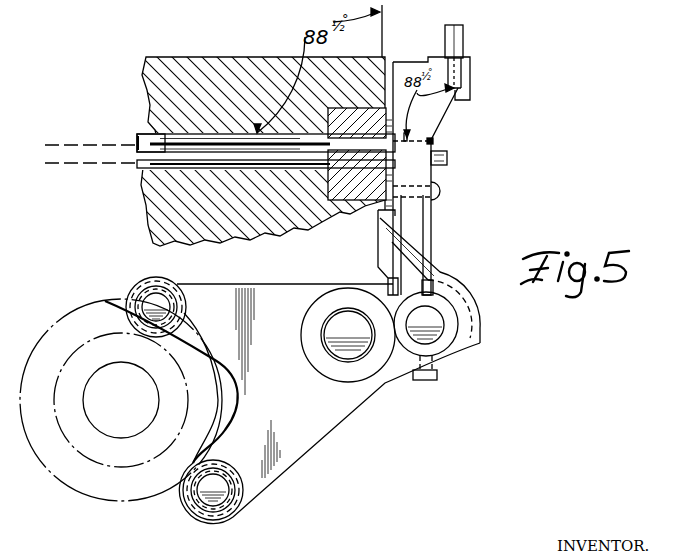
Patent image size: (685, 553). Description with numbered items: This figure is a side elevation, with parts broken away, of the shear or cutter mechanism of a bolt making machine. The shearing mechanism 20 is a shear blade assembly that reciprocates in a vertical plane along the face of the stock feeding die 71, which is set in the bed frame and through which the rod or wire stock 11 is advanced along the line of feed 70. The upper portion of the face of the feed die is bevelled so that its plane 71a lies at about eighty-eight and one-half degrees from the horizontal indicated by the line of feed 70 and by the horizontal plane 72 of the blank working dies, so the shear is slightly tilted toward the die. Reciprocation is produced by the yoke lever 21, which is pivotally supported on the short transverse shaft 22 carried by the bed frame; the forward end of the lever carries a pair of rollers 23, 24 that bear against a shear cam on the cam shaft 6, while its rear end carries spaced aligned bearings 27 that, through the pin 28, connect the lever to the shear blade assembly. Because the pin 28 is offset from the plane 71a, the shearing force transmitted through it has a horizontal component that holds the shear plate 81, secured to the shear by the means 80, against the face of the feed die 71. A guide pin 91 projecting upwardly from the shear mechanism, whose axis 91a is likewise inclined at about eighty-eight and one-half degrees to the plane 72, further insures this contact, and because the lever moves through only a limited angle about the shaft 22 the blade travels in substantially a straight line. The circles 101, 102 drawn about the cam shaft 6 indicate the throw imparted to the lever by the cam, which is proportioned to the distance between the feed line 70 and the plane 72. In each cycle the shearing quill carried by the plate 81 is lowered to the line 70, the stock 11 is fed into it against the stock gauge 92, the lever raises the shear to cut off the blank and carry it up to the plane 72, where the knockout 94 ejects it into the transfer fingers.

The cam shaft 6 is at (121, 400).
The rod or wire stock 11 is at (150, 195).
The shearing mechanism 20 is at (432, 242).
The yoke lever 21 is at (292, 404).
The transverse shaft 22 is at (338, 330).
The roller 23 is at (150, 285).
The roller 24 is at (211, 523).
The bearings 27 is at (434, 141).
The pin 28 is at (427, 335).
The line of feed 70 is at (112, 165).
The stock feeding die 71 is at (380, 122).
The plane of the feed die face 71a is at (386, 24).
The horizontal plane of the dies 72 is at (112, 142).
The securing means 80 is at (433, 190).
The shear plate 81 is at (390, 184).
The guide pin 91 is at (465, 42).
The axis of the guide pin 91a is at (467, 98).
The stock gauge 92 is at (447, 151).
The knockout 94 is at (140, 136).
The throw circle 101 is at (93, 495).
The throw circle 102 is at (80, 453).